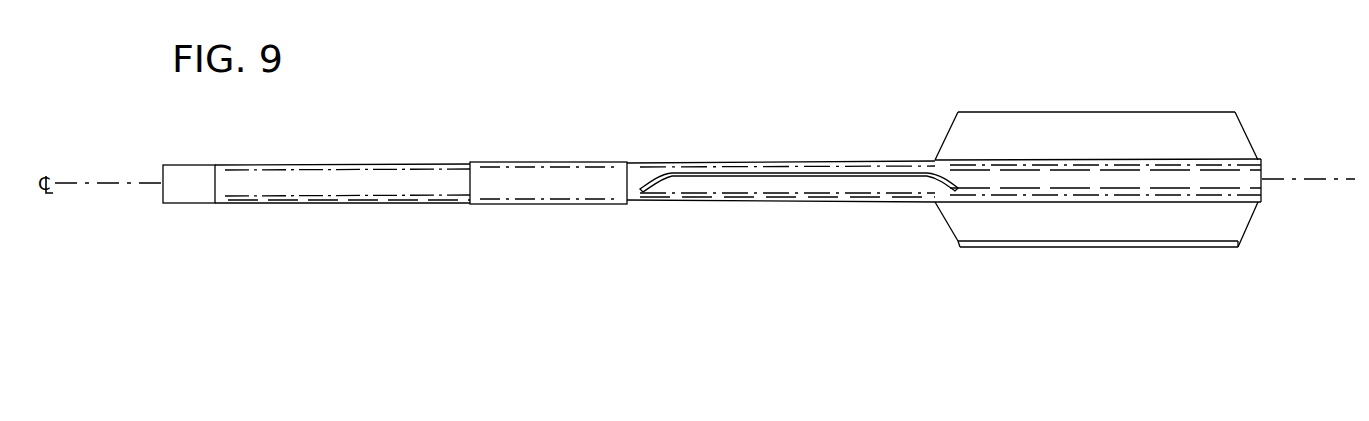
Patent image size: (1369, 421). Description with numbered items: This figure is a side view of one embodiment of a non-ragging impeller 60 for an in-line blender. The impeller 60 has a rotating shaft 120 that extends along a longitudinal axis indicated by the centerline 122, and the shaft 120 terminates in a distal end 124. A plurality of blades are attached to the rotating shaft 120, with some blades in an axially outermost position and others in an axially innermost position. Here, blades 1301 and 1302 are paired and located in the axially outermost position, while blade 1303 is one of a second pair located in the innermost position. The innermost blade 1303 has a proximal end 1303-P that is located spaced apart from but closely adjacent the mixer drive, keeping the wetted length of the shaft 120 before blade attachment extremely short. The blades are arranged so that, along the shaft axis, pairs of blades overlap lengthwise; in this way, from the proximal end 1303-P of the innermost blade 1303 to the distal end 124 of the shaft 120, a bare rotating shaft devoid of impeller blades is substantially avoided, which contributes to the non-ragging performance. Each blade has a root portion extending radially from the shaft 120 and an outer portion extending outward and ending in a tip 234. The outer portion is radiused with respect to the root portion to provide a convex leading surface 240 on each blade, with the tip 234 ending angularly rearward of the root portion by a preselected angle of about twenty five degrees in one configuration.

The impeller 60 is at (512, 78).
The rotating shaft 120 is at (240, 182).
The centerline 122 is at (143, 183).
The distal end 124 is at (1262, 172).
The blade 1301 is at (945, 214).
The blade 1302 is at (1018, 130).
The blade 1303 is at (680, 184).
The proximal end of blade 1303-P is at (632, 185).
The tip 234 is at (727, 173).
The convex leading surface 240 is at (835, 184).